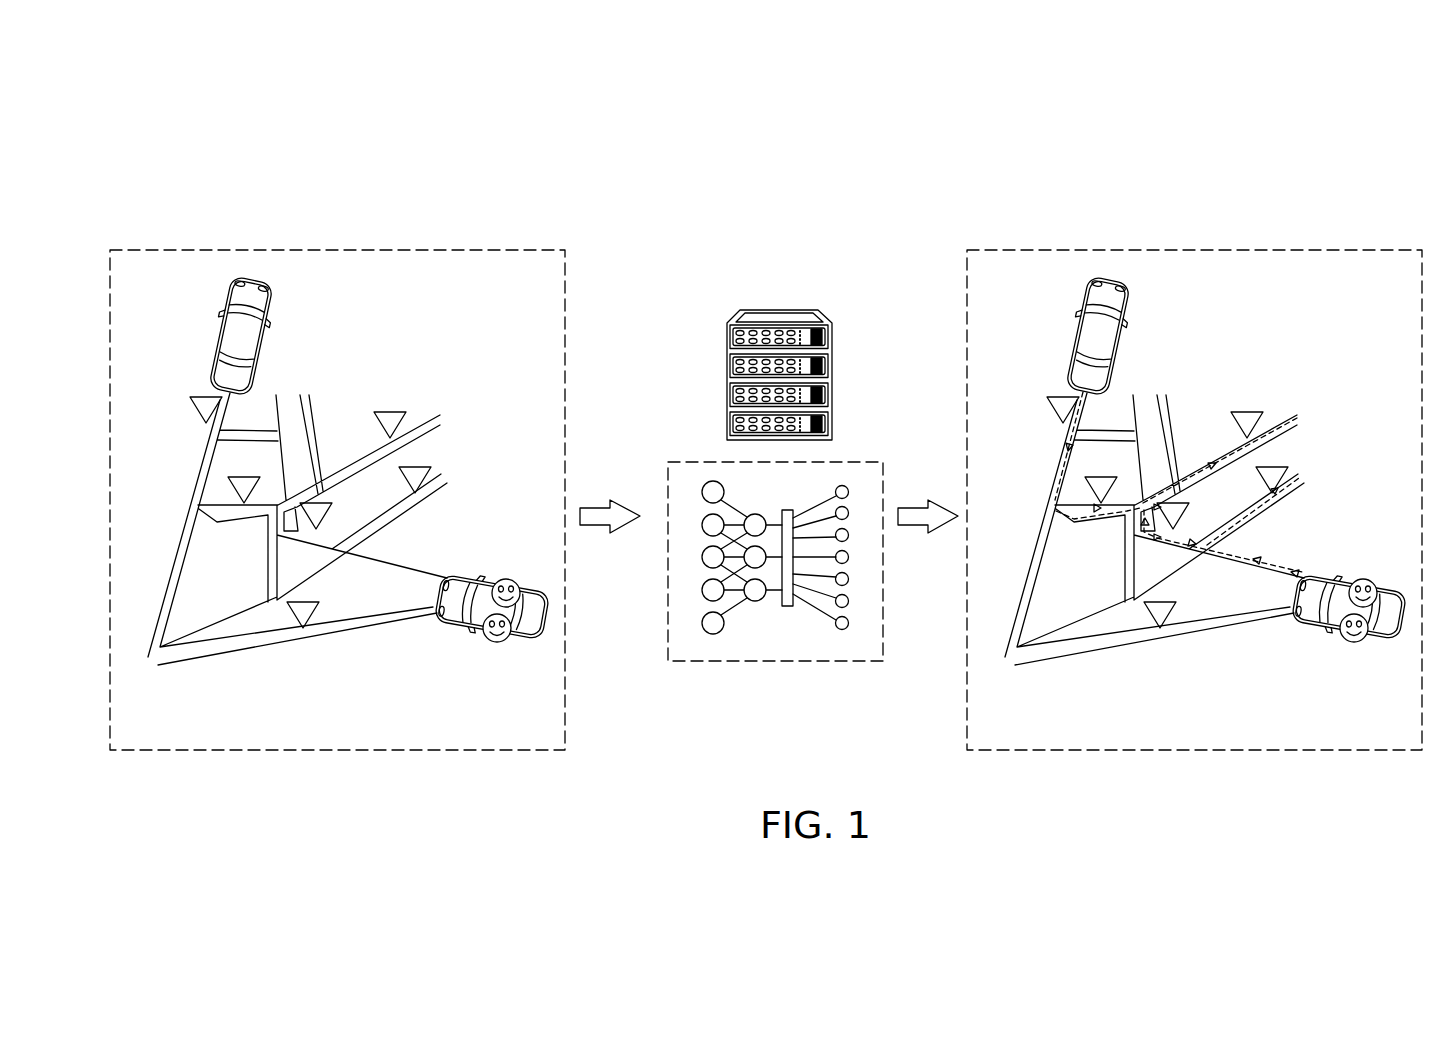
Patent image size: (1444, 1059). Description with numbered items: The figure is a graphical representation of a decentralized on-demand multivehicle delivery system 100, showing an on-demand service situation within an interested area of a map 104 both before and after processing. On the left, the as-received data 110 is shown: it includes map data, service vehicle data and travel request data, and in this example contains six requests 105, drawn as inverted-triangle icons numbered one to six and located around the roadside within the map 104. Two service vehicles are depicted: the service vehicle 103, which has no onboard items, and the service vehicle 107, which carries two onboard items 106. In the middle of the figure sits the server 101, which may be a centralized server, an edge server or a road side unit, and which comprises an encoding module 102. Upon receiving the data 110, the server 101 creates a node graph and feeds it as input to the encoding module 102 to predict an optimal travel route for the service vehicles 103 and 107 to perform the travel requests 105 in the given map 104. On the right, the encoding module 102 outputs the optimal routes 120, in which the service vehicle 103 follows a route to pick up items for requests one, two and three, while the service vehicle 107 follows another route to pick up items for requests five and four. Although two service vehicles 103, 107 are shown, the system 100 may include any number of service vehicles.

The decentralized on-demand multivehicle delivery system 100 is at (958, 178).
The server 101 is at (787, 310).
The encoding module 102 is at (798, 653).
The service vehicle 103 is at (270, 294).
The map 104 is at (309, 647).
The requests 105 is at (397, 406).
The onboard items 106 is at (483, 645).
The service vehicle 107 is at (452, 574).
The as-received data 110 is at (385, 250).
The optimal routes 120 is at (1243, 250).